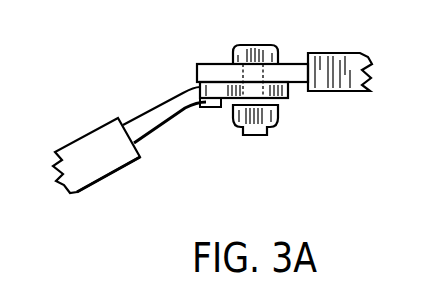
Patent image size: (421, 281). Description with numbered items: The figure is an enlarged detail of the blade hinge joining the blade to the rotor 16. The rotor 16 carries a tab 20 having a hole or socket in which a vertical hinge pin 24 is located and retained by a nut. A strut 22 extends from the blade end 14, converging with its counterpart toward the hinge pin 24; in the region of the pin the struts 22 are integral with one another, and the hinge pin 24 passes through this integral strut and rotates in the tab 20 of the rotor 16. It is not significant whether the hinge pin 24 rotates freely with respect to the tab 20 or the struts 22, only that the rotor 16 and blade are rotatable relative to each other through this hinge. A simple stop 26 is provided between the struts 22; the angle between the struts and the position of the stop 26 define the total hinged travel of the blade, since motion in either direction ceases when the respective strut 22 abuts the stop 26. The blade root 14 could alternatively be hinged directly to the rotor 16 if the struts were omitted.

The blade end 14 is at (124, 156).
The rotor 16 is at (345, 93).
The tab 20 is at (198, 64).
The strut 22 is at (163, 103).
The hinge pin 24 is at (253, 136).
The stop 26 is at (206, 108).